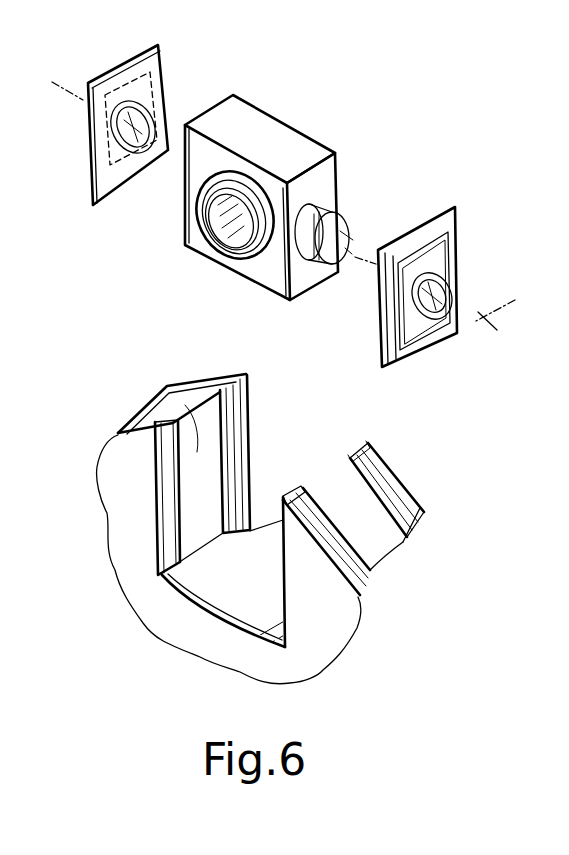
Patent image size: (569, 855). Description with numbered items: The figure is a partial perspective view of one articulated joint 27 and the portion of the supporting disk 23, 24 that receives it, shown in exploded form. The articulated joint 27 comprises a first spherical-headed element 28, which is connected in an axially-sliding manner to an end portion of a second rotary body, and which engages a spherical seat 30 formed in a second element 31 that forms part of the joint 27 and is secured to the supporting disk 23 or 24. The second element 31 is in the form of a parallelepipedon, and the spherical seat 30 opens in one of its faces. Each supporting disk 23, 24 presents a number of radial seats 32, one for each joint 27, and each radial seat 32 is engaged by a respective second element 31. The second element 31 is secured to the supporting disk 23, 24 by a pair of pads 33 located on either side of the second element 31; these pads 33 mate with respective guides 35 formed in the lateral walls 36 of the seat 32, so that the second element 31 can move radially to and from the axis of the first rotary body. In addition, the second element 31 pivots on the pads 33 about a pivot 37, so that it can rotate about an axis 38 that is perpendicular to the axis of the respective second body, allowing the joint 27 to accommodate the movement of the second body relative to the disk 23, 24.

The supporting disk 23 is at (271, 589).
The supporting disk 24 is at (271, 589).
The articulated joint 27 is at (275, 201).
The first spherical-headed element 28 is at (215, 249).
The spherical seat 30 is at (262, 258).
The second element 31 is at (267, 202).
The radial seat 32 is at (240, 561).
The pad 33 is at (150, 82).
The guide 35 is at (248, 505).
The lateral wall 36 is at (148, 400).
The pivot 37 is at (400, 247).
The axis 38 is at (302, 206).